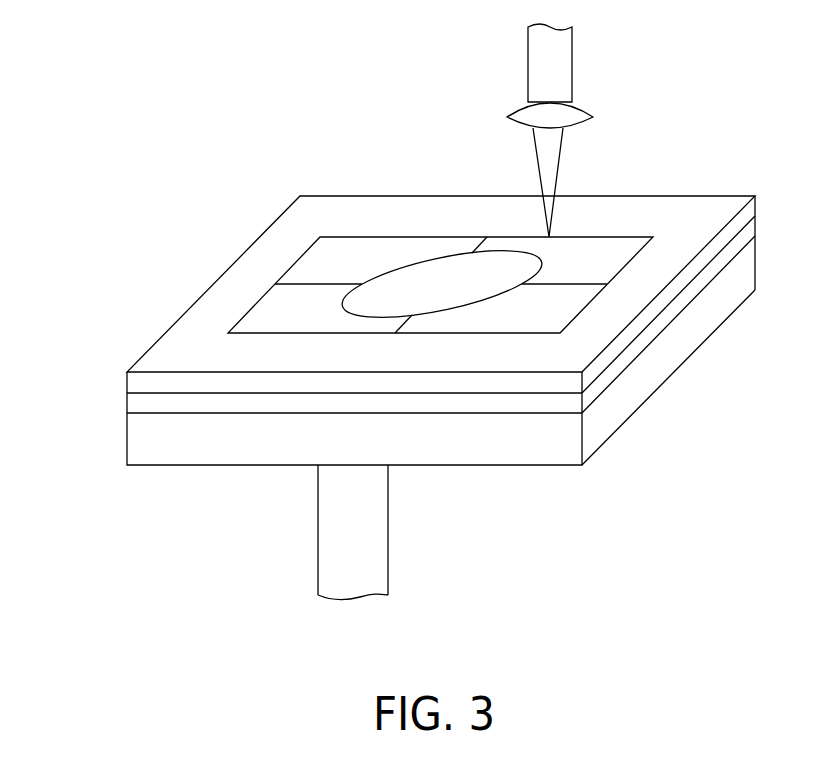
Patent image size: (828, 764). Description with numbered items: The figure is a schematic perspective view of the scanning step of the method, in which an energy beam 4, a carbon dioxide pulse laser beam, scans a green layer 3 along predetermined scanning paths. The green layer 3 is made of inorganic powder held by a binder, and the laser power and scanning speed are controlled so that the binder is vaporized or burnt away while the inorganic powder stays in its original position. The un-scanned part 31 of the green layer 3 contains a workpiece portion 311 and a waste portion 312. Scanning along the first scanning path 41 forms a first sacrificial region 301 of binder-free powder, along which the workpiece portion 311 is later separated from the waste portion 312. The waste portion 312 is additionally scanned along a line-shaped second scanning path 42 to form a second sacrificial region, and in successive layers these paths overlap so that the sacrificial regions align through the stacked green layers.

The green layer 3 is at (752, 234).
The energy beam 4 is at (516, 60).
The un-scanned part 31 is at (85, 258).
The workpiece portion 311 is at (362, 300).
The waste portion 312 is at (293, 316).
The first scanning path 41 is at (250, 302).
The first sacrificial region 301 is at (441, 285).
The second scanning path 42 is at (470, 202).